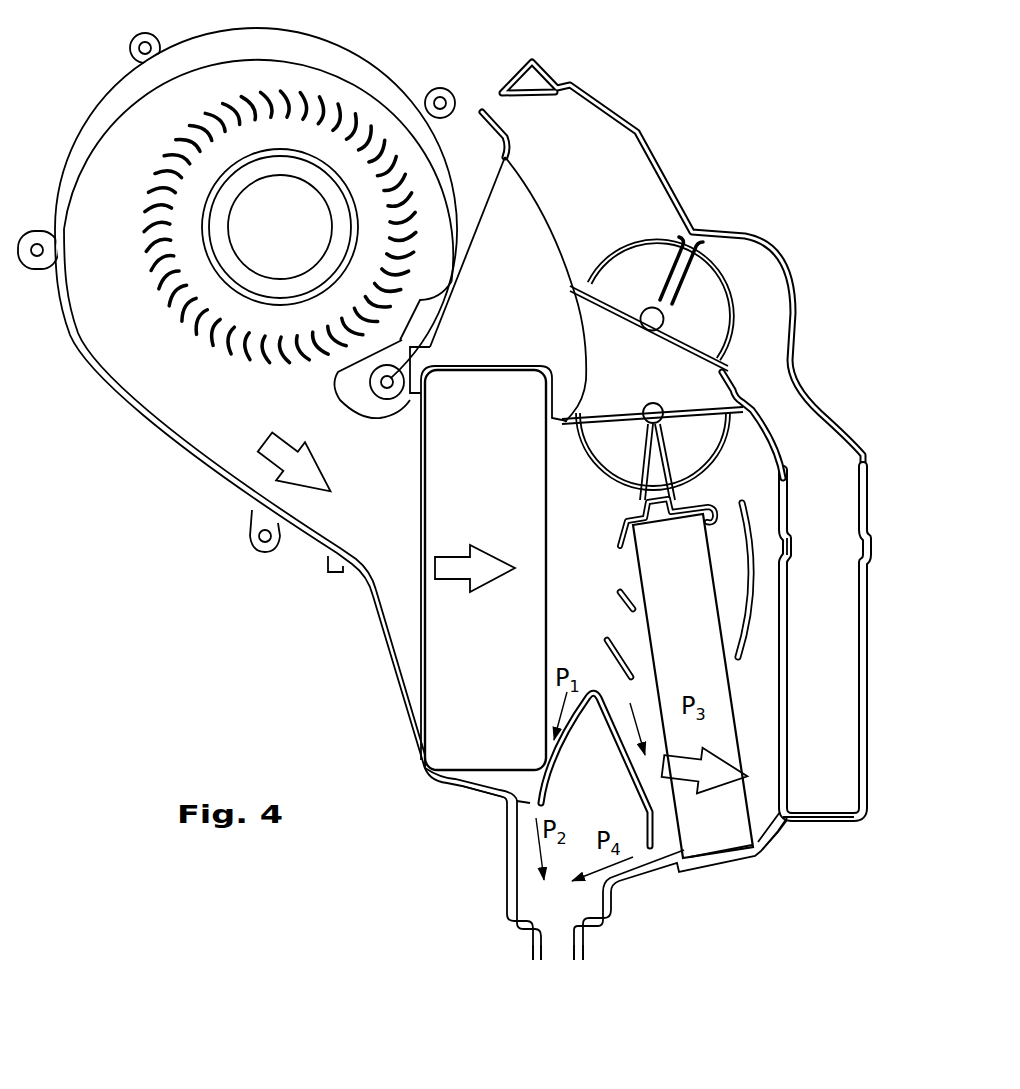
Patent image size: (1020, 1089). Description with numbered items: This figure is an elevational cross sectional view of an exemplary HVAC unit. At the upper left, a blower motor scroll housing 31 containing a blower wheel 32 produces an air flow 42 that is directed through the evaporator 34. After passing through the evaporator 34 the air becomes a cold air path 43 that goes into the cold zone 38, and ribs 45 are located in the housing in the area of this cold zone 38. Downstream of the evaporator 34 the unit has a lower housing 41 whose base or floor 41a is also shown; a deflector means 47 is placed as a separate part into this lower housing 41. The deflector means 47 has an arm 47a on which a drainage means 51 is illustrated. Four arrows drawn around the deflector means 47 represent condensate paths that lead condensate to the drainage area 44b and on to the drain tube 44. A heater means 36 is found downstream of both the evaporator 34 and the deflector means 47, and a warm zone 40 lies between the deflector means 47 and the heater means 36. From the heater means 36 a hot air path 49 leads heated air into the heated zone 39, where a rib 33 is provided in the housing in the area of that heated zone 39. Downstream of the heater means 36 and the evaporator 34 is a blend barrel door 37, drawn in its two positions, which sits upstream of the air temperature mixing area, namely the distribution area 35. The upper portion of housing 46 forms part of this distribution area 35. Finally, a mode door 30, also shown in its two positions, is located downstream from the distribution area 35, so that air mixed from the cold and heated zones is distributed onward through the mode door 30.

The blower motor scroll housing 31 is at (112, 94).
The blower wheel 32 is at (183, 338).
The evaporator 34 is at (416, 632).
The cold zone 38 is at (577, 516).
The air flow 42 is at (264, 458).
The cold air path 43 is at (436, 568).
The ribs 45 is at (616, 598).
The upper portion of housing 46 is at (792, 267).
The mode door 30 is at (743, 318).
The distribution area 35 is at (673, 360).
The blend barrel door 37 is at (740, 443).
The rib 33 is at (758, 601).
The heated zone 39 is at (763, 629).
The warm zone 40 is at (660, 742).
The hot air path 49 is at (727, 787).
The deflector means 47 is at (662, 812).
The arm 47a is at (685, 832).
The drainage means 51 is at (651, 862).
The heater means 36 is at (758, 821).
The lower housing 41 is at (837, 826).
The base or floor 41a is at (639, 886).
The drain tube 44 is at (522, 952).
The drainage area 44b is at (559, 954).